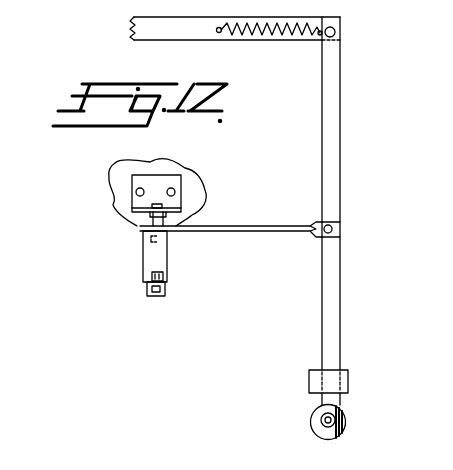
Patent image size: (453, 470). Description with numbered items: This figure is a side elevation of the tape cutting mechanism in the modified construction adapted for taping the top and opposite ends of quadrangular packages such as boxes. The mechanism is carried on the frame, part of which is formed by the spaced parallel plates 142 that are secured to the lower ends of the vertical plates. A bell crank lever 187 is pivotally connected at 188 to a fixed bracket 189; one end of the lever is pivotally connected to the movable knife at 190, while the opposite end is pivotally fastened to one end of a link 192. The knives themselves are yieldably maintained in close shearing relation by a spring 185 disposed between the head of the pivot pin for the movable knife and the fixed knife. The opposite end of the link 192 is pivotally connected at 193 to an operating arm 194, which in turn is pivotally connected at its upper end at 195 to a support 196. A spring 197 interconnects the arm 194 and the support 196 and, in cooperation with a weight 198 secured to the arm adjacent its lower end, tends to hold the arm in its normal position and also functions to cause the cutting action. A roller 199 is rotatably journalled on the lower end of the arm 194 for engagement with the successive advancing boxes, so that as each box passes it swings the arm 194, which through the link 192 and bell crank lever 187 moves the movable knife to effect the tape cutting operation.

The spaced parallel plates 142 is at (126, 166).
The spring 185 is at (148, 293).
The bell crank lever 187 is at (152, 246).
The pivot 188 is at (146, 222).
The fixed bracket 189 is at (172, 186).
The pivotal connection 190 is at (166, 278).
The link 192 is at (265, 217).
The pivotal connection 193 is at (334, 229).
The operating arm 194 is at (337, 172).
The pivotal connection 195 is at (336, 32).
The support 196 is at (208, 36).
The spring 197 is at (292, 35).
The weight 198 is at (350, 380).
The roller 199 is at (313, 420).